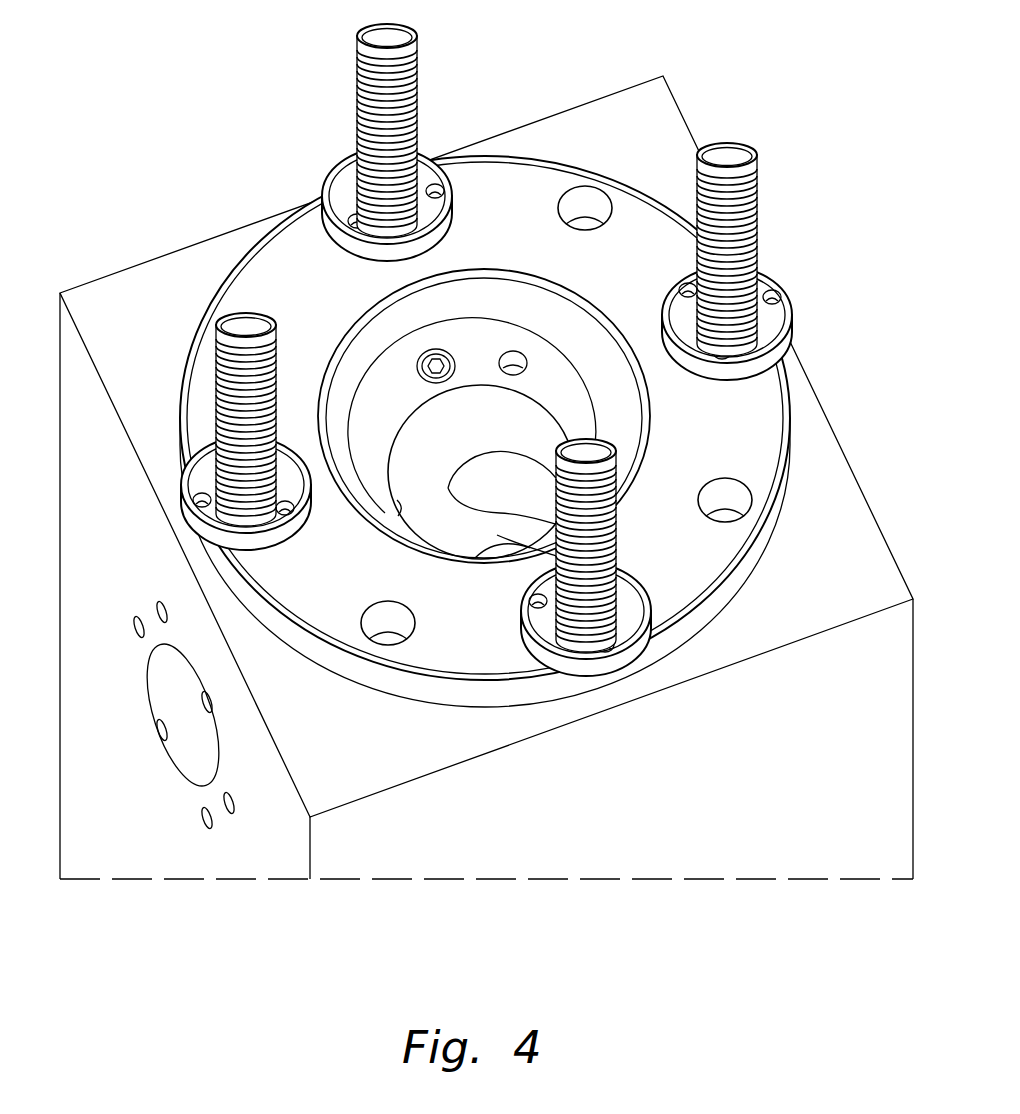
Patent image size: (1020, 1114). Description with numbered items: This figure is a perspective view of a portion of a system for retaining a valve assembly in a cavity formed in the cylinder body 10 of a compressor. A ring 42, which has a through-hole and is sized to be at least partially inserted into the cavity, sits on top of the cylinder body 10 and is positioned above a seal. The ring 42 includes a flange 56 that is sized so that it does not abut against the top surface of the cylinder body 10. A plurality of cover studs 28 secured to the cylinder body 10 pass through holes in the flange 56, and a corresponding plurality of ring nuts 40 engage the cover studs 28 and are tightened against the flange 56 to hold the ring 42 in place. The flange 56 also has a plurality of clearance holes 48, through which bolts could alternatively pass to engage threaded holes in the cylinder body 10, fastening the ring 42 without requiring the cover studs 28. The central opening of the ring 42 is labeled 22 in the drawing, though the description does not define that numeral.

The cylinder body 10 is at (152, 258).
The central bore 22 is at (478, 350).
The cover studs 28 is at (357, 64).
The ring nuts 40 is at (338, 162).
The ring 42 is at (572, 157).
The clearance holes 48 is at (566, 208).
The flange 56 is at (746, 577).